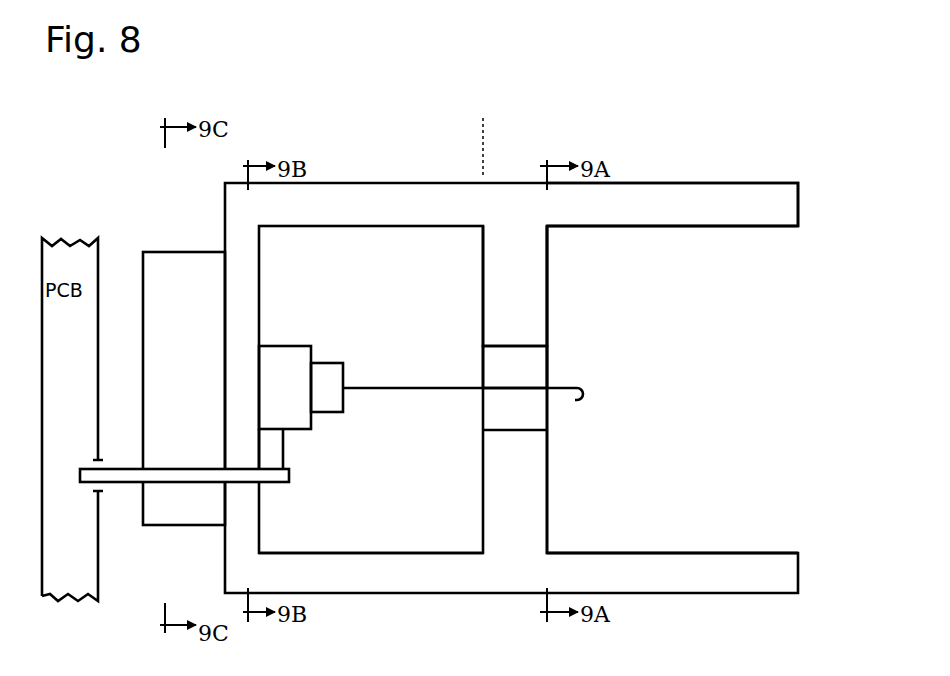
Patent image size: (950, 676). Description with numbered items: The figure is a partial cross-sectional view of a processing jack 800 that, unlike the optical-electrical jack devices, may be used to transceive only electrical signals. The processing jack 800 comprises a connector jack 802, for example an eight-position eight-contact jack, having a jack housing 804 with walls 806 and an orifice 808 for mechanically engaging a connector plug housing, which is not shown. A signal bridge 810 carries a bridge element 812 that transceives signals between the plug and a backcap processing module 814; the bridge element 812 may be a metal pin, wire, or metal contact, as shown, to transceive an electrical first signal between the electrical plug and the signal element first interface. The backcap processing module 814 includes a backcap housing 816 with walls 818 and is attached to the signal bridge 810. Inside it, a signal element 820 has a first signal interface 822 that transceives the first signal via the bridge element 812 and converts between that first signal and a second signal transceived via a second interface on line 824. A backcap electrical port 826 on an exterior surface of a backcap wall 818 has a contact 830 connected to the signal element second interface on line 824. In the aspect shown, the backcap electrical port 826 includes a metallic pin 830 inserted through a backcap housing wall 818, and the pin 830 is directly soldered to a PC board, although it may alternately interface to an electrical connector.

The processing jack 800 is at (752, 66).
The connector jack 802 is at (655, 158).
The jack housing 804 is at (781, 176).
The walls 806 is at (672, 204).
The orifice 808 is at (803, 450).
The signal bridge 810 is at (515, 286).
The bridge element 812 is at (515, 388).
The backcap processing module 814 is at (352, 159).
The backcap housing 816 is at (444, 603).
The walls 818 is at (371, 373).
The signal element 820 is at (285, 387).
The first signal interface 822 is at (330, 413).
The second interface on line 824 is at (285, 447).
The backcap electrical port 826 is at (184, 388).
The contact 830 is at (270, 483).